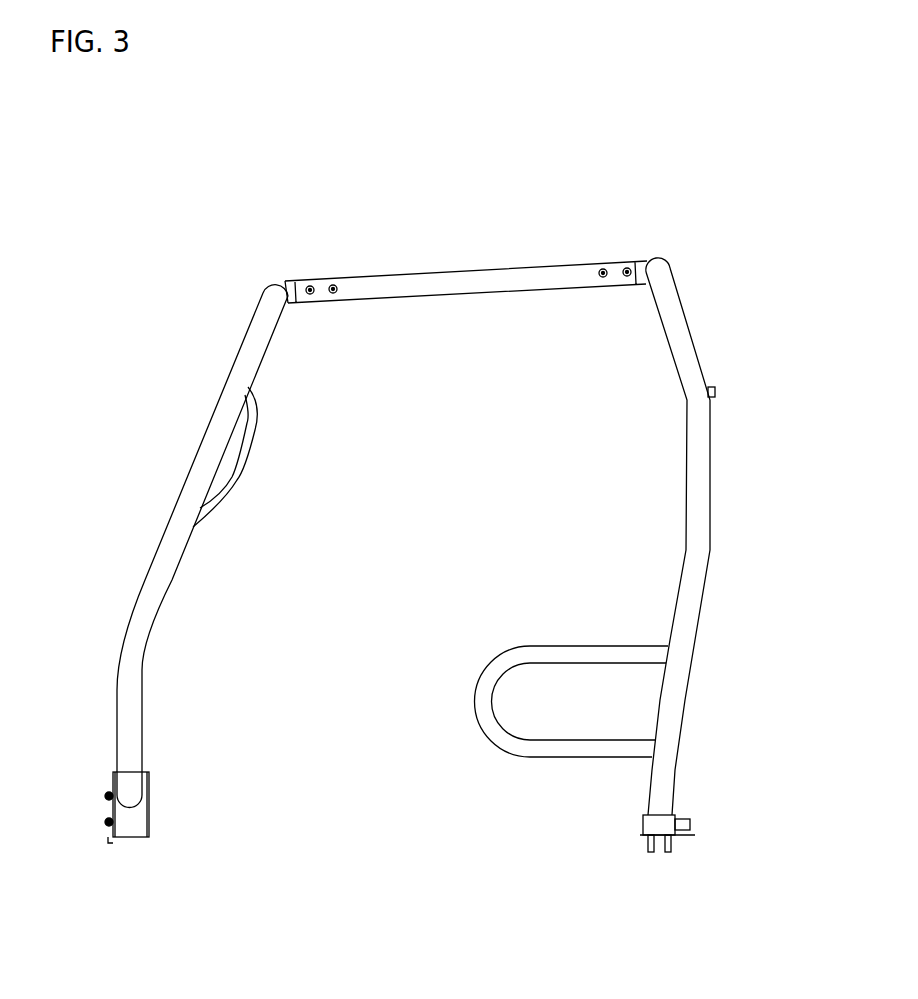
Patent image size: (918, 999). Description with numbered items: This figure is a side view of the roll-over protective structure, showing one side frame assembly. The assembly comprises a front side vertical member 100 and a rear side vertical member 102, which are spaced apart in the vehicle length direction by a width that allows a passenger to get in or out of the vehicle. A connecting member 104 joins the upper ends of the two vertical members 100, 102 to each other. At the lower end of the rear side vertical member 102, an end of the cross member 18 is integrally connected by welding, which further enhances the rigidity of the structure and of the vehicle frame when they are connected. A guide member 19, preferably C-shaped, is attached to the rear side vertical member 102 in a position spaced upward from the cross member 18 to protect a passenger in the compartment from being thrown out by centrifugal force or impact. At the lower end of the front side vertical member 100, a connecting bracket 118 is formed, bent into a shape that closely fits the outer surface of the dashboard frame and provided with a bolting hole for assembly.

The front side vertical member 100 is at (172, 550).
The rear side vertical member 102 is at (698, 482).
The connecting member 104 is at (490, 278).
The guide member 19 is at (558, 652).
The connecting bracket 118 is at (130, 823).
The cross member 18 is at (680, 817).